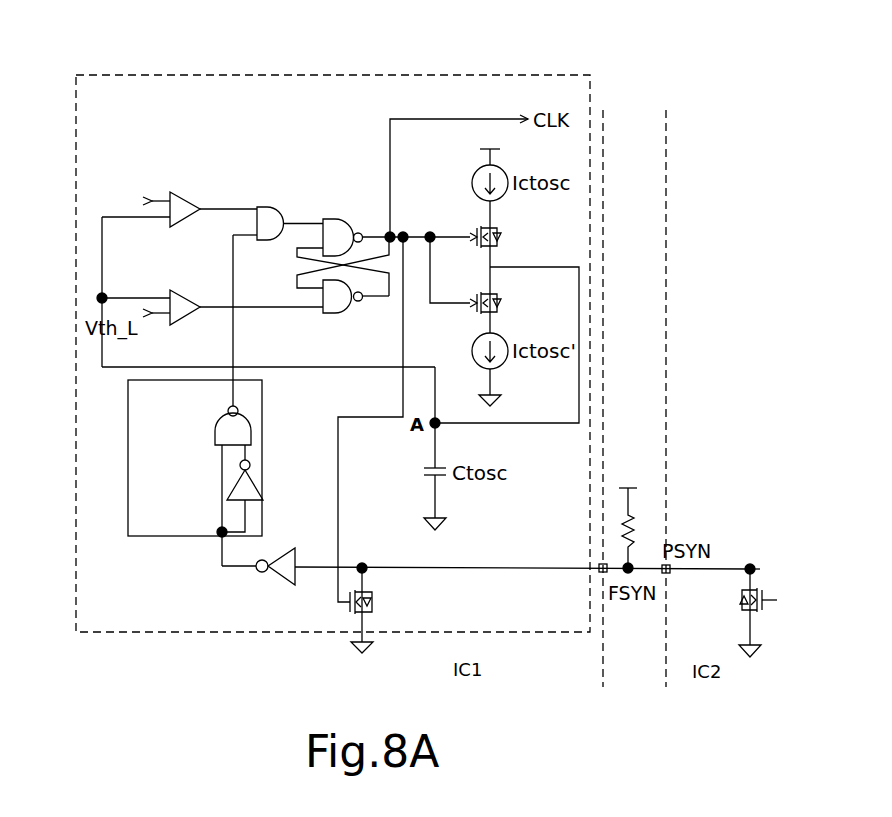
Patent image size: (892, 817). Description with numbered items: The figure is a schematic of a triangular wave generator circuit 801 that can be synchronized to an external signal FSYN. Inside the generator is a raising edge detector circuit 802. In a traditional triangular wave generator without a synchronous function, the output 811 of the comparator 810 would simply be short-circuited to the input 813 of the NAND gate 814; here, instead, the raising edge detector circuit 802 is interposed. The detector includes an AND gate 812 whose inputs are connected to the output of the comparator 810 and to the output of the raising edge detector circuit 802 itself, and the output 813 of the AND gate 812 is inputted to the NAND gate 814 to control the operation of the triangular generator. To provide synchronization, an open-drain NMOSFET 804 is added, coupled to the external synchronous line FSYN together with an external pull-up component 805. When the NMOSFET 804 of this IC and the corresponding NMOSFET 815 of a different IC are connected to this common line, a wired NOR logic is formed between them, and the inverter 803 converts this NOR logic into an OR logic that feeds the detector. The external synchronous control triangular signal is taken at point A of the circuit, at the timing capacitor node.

The triangular generator circuit 801 is at (265, 75).
The raising edge detector circuit 802 is at (128, 443).
The inverter 803 is at (280, 572).
The NMOSFET 804 is at (352, 610).
The external pull-up capacitor 805 is at (633, 530).
The comparator 810 is at (180, 195).
The output of the comparator 811 is at (215, 205).
The AND gate 812 is at (263, 222).
The output of the AND gate 813 is at (383, 226).
The NAND gate 814 is at (337, 227).
The NMOSFET 815 is at (762, 593).